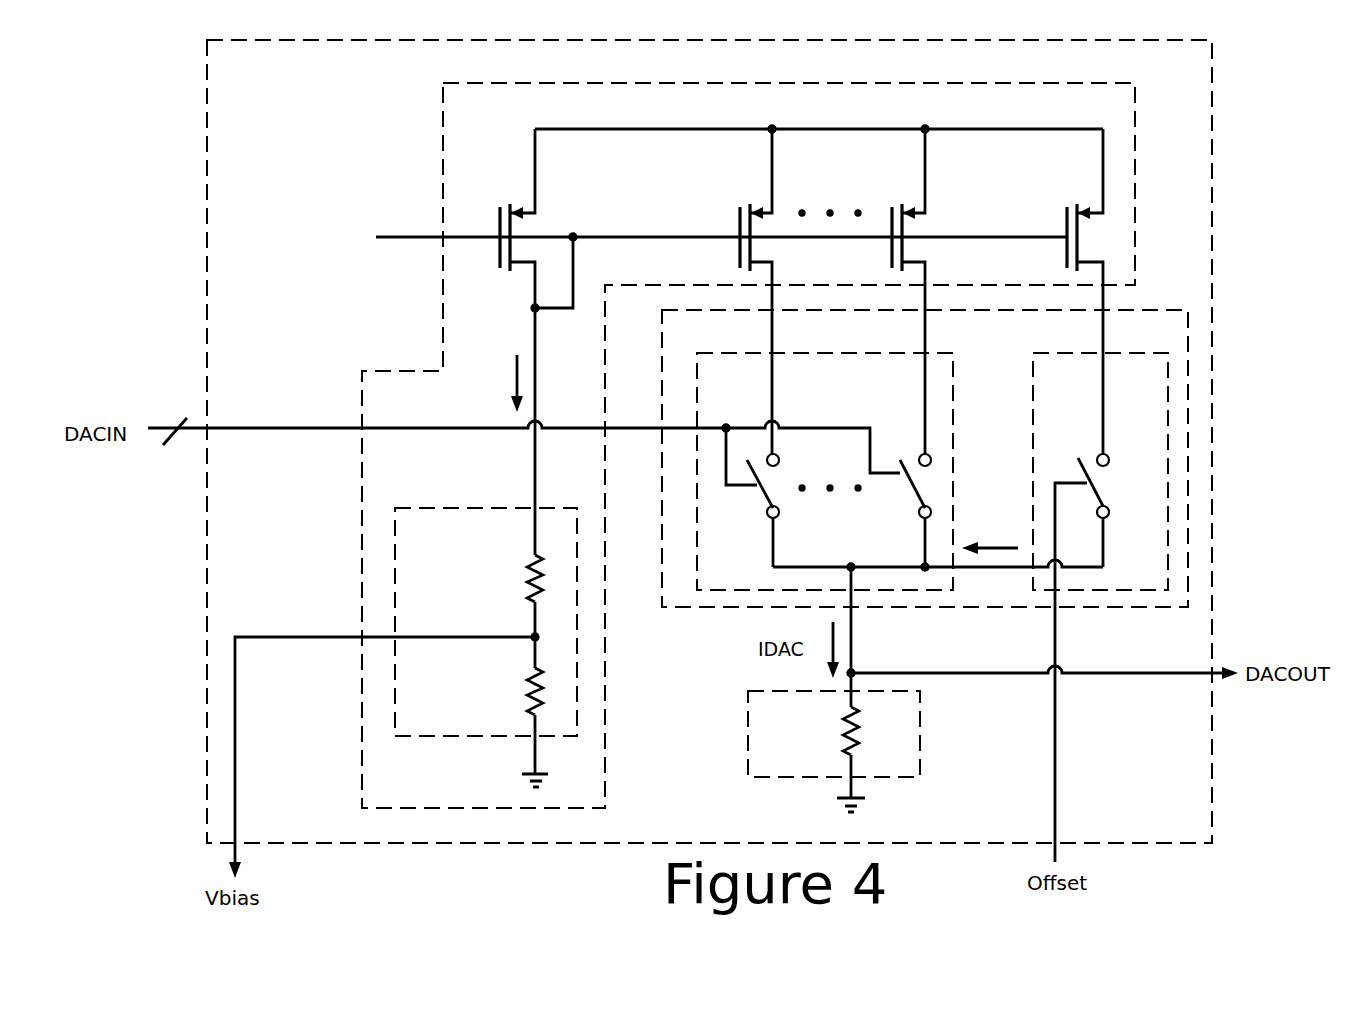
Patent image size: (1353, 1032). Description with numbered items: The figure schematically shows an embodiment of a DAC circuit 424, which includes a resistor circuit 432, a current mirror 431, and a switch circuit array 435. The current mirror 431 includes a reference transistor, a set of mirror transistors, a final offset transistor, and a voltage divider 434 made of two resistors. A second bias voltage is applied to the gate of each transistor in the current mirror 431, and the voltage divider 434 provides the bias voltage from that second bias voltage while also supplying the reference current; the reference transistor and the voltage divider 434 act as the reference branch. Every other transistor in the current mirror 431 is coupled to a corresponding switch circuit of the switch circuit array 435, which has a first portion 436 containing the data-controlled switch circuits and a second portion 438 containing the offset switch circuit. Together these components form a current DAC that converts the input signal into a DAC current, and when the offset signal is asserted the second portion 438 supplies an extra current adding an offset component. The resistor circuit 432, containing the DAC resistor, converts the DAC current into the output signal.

The DAC circuit 424 is at (1194, 71).
The current mirror 431 is at (869, 116).
The resistor circuit 432 is at (911, 749).
The voltage divider 434 is at (450, 544).
The switch circuit array 435 is at (861, 343).
The portion 436 is at (861, 384).
The portion 438 is at (1155, 383).